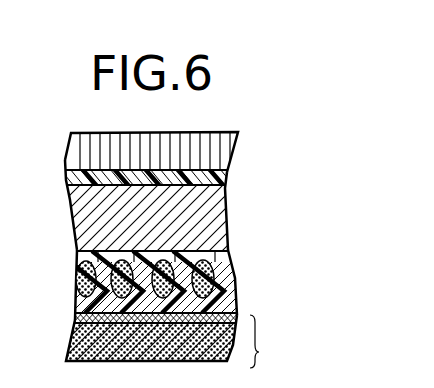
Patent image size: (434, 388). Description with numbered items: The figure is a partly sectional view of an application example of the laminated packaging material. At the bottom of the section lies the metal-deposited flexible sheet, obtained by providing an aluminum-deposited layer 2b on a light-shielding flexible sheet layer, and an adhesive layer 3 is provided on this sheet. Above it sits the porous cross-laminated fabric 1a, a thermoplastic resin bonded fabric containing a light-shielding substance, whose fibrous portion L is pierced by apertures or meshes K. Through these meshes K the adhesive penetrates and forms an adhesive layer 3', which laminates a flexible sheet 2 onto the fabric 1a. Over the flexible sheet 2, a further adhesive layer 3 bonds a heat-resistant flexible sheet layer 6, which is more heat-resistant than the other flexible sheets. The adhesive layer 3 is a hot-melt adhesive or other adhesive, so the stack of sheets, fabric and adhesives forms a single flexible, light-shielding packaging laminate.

The heat-resistant flexible sheet layer 6 is at (233, 145).
The adhesive layer 3 is at (139, 246).
The flexible sheet layer 2 is at (151, 206).
The adhesive layer formed through the apertures 3' is at (120, 273).
The apertures or meshes K is at (77, 285).
The fibrous portion L is at (207, 272).
The porous cross-laminated fabric containing a light-shielding substance 1a is at (208, 293).
The aluminum-deposited layer 2b is at (73, 322).